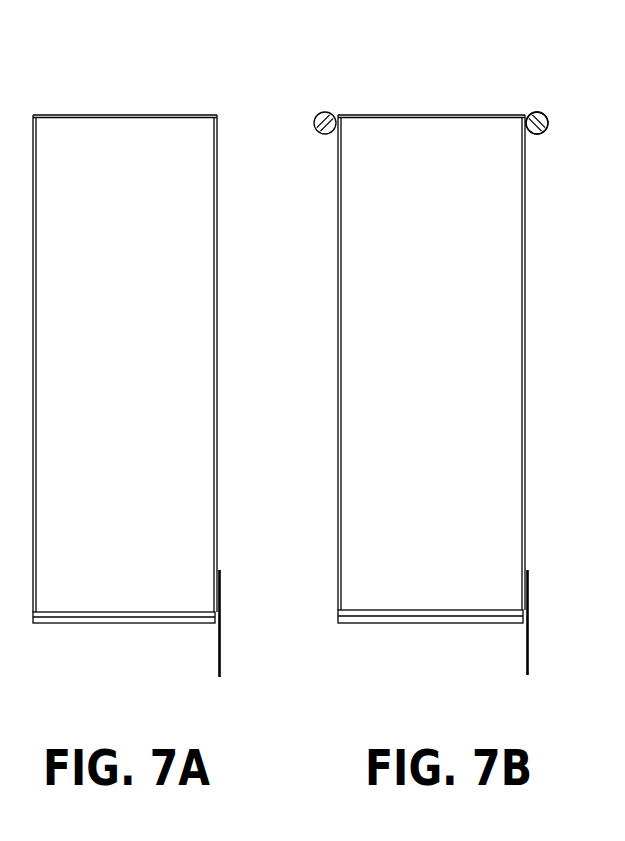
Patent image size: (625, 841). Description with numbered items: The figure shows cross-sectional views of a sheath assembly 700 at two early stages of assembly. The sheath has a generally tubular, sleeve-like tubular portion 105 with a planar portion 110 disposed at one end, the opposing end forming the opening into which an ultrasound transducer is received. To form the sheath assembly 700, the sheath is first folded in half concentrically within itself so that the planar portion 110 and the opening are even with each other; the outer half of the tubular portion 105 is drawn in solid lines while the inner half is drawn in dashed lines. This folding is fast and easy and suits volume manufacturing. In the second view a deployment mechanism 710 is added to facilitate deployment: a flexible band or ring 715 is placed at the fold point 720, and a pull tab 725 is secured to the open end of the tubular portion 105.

In FIG. 7A, the tubular portion 105 is at (192, 380).
In FIG. 7B, the tubular portion 105 is at (505, 413).
In FIG. 7A, the planar portion 110 is at (120, 617).
In FIG. 7B, the planar portion 110 is at (422, 622).
In FIG. 7B, the sheath assembly 700 is at (377, 73).
In FIG. 7B, the deployment mechanism 710 is at (532, 84).
In FIG. 7B, the flexible band or ring 715 is at (543, 118).
In FIG. 7A, the fold point 720 is at (150, 115).
In FIG. 7B, the fold point 720 is at (467, 113).
In FIG. 7A, the pull tab 725 is at (217, 650).
In FIG. 7B, the pull tab 725 is at (523, 652).